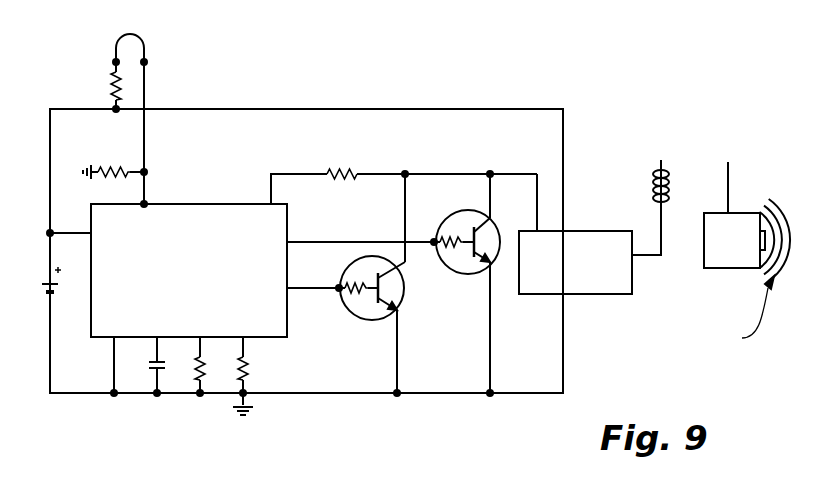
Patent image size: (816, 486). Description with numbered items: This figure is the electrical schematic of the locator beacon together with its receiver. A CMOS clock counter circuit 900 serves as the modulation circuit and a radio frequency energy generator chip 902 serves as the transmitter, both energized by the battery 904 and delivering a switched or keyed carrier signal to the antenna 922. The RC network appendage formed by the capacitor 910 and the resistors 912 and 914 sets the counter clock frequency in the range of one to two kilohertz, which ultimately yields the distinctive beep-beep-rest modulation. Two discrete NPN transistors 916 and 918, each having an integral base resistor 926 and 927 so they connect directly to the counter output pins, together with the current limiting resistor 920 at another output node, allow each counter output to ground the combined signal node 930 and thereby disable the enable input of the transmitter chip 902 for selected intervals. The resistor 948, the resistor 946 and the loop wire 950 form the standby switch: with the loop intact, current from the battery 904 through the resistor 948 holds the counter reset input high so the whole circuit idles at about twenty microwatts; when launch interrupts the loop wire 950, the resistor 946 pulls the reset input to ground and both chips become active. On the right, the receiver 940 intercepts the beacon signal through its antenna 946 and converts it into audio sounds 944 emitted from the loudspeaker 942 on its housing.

The CD 4060 CMOS clock counter circuit 900 is at (212, 204).
The HX 1003 radio frequency energy generator circuit chip 902 is at (585, 231).
The battery 904 is at (47, 291).
The RC network capacitor 910 is at (150, 365).
The RC network resistor 912 is at (197, 375).
The RC network resistor 914 is at (248, 370).
The discrete transistor 916 is at (360, 317).
The discrete transistor 918 is at (493, 265).
The current limiting resistor 920 is at (330, 170).
The antenna 922 is at (655, 178).
The integral base resistor 926 is at (355, 283).
The integral base resistor 927 is at (452, 238).
The combined signal node 930 is at (405, 172).
The receiver 940 is at (722, 268).
The transducer device or loudspeaker 942 is at (768, 205).
The audio sounds 944 is at (739, 314).
The resistor 946 is at (110, 165).
The resistor 948 is at (112, 86).
The loop wire 950 is at (142, 40).